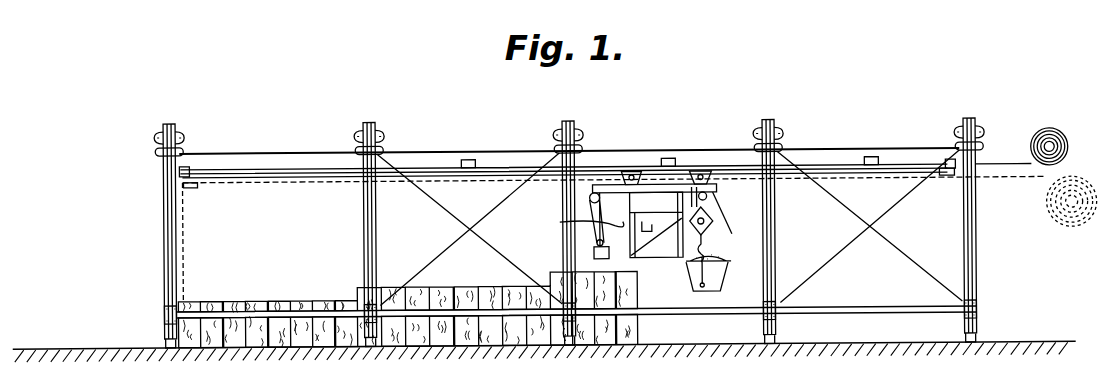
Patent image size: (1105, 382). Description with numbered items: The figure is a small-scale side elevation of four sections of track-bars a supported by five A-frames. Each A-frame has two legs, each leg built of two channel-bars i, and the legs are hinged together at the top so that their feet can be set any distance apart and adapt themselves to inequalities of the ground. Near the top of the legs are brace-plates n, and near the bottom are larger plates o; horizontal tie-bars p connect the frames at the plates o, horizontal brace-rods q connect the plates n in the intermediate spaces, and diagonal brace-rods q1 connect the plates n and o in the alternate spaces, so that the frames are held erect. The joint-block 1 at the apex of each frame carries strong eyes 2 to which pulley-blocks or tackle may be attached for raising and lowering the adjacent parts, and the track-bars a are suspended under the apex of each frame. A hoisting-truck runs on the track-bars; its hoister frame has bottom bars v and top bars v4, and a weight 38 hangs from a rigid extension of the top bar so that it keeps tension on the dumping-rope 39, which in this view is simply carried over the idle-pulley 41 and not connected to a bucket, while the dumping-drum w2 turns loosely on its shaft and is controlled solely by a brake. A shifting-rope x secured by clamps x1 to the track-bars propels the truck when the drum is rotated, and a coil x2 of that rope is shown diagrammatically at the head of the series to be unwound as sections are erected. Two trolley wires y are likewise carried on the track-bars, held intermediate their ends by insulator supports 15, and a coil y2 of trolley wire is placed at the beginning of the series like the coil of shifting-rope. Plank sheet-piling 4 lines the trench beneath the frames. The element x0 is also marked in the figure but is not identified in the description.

The joint-block 1 is at (721, 283).
The eyes 2 is at (382, 134).
The sheet-piling 4 is at (465, 287).
The insulator support 15 is at (470, 159).
The weight 38 is at (611, 261).
The dumping-rope 39 is at (588, 221).
The idle-pulley 41 is at (716, 195).
The track-bars a is at (824, 166).
The channel-bars i is at (164, 247).
The brace-plates n is at (160, 152).
The plates o is at (162, 314).
The tie-bars p is at (258, 308).
The horizontal brace-rods q is at (276, 151).
The brace-rods q1 is at (501, 205).
The bottom bars v is at (659, 262).
The top bars v4 is at (610, 185).
The dumping-drum w2 is at (594, 220).
The shifting-rope x is at (303, 183).
The right stop block x° x0 is at (953, 186).
The clamps x1 is at (191, 186).
The coil of shifting-rope x2 is at (1062, 230).
The trolley wires y is at (428, 167).
The coil of trolley wire y2 is at (1047, 131).